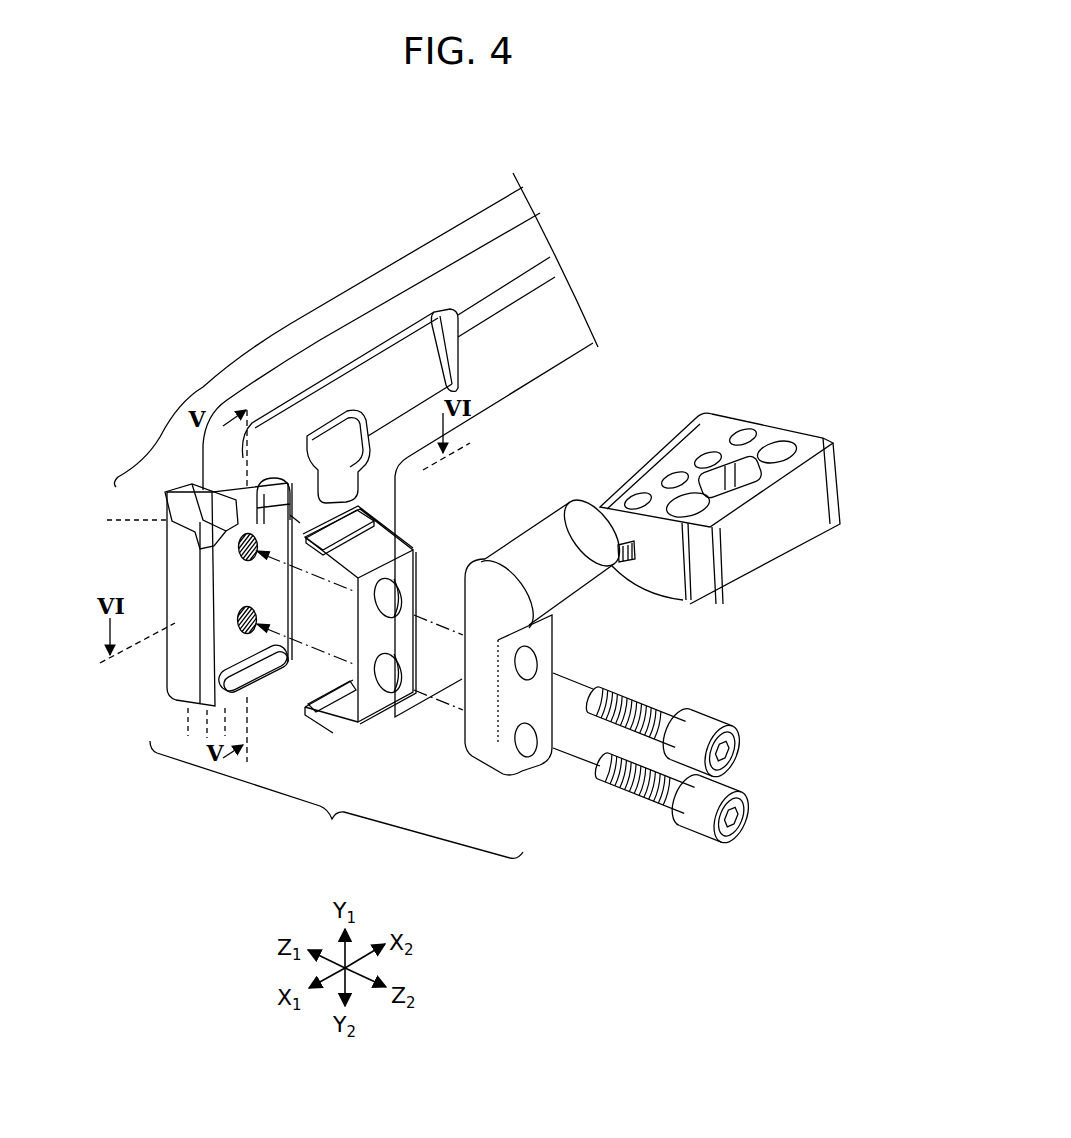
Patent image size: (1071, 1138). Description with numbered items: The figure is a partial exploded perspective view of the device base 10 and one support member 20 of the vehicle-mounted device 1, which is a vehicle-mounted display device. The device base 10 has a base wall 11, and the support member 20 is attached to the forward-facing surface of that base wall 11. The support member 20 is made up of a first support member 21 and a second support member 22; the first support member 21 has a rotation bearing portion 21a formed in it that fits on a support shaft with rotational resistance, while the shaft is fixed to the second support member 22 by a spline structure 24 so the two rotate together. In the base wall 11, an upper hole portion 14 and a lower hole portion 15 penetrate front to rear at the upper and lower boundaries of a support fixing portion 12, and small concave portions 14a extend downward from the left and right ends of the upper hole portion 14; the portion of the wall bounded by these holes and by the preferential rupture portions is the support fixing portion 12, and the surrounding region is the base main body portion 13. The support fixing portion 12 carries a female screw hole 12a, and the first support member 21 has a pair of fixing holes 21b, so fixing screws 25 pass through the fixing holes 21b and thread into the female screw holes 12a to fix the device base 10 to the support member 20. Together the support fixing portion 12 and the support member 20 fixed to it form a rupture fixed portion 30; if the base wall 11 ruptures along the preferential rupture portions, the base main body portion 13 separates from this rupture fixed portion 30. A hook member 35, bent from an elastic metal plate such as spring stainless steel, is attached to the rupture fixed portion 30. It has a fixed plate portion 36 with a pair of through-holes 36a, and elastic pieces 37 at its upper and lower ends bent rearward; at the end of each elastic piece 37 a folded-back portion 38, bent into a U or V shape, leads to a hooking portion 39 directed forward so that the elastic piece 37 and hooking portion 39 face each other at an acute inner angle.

The vehicle-mounted device 1 is at (584, 204).
The device base 10 is at (449, 226).
The base wall 11 is at (510, 363).
The support fixing portion 12 is at (223, 612).
The female screw hole 12a is at (242, 565).
The base main body portion 13 is at (403, 443).
The upper hole portion 14 is at (268, 495).
The small concave portion 14a is at (250, 501).
The lower hole portion 15 is at (249, 664).
The support member 20 is at (652, 562).
The first support member 21 is at (570, 527).
The rotation bearing portion 21a is at (527, 547).
The fixing hole 21b is at (531, 657).
The second support member 22 is at (710, 423).
The spline structure 24 is at (628, 564).
The fixing screw 25 is at (745, 800).
The rupture fixed portion 30 is at (336, 799).
The hook member 35 is at (392, 634).
The fixed plate portion 36 is at (368, 633).
The through-hole 36a is at (400, 598).
The elastic piece 37 is at (375, 540).
The folded-back portion 38 is at (239, 546).
The hooking portion 39 is at (358, 517).